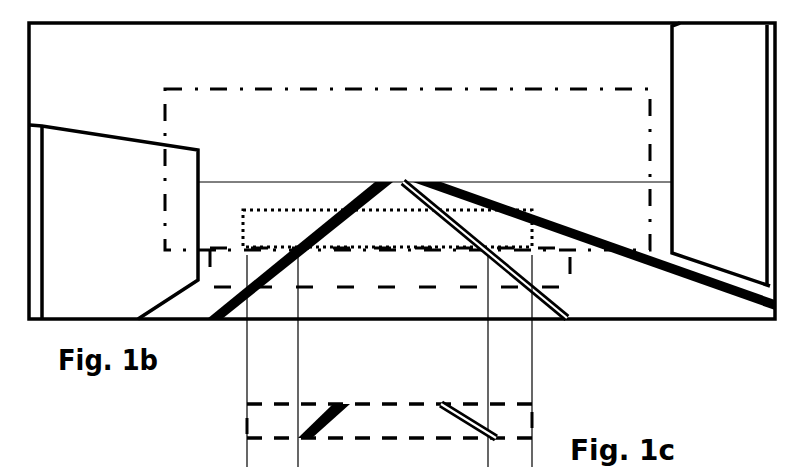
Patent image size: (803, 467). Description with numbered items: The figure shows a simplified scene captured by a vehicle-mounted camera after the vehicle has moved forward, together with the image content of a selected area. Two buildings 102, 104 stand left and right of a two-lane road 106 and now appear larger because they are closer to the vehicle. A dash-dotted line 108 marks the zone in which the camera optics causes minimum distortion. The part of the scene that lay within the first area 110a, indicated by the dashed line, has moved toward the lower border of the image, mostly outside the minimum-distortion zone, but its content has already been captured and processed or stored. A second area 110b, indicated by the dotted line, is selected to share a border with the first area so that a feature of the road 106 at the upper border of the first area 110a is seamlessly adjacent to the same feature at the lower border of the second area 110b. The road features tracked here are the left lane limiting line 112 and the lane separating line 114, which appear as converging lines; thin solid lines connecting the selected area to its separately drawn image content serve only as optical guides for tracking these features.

In FIG. 1B, the building 102 is at (114, 222).
In FIG. 1B, the building 104 is at (721, 154).
In FIG. 1B, the two-lane road 106 is at (594, 246).
In FIG. 1B, the dash-dotted line 108 is at (360, 80).
In FIG. 1B, the first area 110a is at (390, 267).
In FIG. 1C, the first area 110a is at (342, 421).
In FIG. 1B, the second area 110b is at (387, 228).
In FIG. 1C, the second area 110b is at (389, 421).
In FIG. 1B, the left lane limiting line 112 is at (346, 205).
In FIG. 1C, the left lane limiting line 112 is at (322, 412).
In FIG. 1B, the lane separating line 114 is at (612, 246).
In FIG. 1C, the lane separating line 114 is at (455, 405).